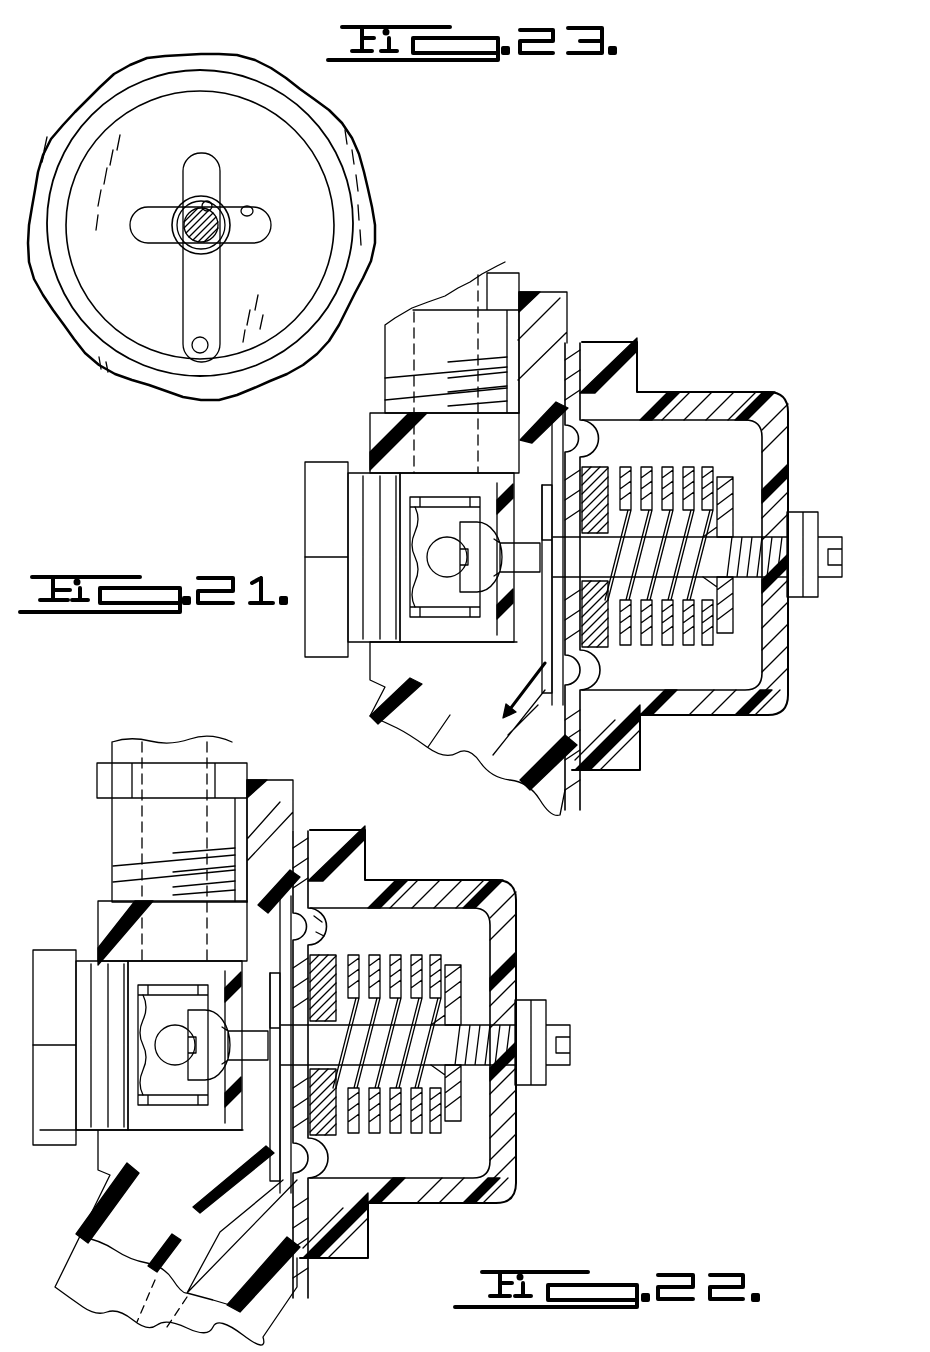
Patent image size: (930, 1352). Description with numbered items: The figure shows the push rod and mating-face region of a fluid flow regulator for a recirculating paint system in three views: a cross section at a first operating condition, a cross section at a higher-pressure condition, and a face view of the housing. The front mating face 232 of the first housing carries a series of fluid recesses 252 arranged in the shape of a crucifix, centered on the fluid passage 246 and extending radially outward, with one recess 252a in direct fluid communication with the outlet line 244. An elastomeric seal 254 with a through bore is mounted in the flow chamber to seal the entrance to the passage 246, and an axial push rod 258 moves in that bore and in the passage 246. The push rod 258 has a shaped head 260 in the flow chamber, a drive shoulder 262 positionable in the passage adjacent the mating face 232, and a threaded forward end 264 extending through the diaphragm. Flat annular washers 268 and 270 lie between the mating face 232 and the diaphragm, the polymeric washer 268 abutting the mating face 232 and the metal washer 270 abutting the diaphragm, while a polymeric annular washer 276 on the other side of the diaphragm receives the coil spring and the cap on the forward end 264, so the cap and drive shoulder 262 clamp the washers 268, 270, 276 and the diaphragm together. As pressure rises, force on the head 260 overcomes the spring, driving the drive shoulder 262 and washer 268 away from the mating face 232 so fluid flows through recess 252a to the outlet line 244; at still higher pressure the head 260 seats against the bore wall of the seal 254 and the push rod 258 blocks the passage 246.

In FIG. 23, the mating face 232 is at (320, 226).
In FIG. 23, the outlet line 244 is at (201, 358).
In FIG. 21, the outlet line 244 is at (460, 752).
In FIG. 22, the outlet line 244 is at (183, 1231).
In FIG. 23, the fluid passage 246 is at (214, 205).
In FIG. 22, the fluid passage 246 is at (255, 1044).
In FIG. 23, the fluid recesses 252 is at (250, 215).
In FIG. 23, the recess 252a is at (187, 286).
In FIG. 21, the recess 252a is at (543, 653).
In FIG. 22, the recess 252a is at (222, 1081).
In FIG. 21, the elastomeric seal 254 is at (500, 625).
In FIG. 22, the elastomeric seal 254 is at (185, 1064).
In FIG. 22, the push rod 258 is at (124, 1047).
In FIG. 21, the shaped head 260 is at (466, 600).
In FIG. 22, the shaped head 260 is at (206, 1026).
In FIG. 23, the drive shoulder 262 is at (222, 240).
In FIG. 21, the drive shoulder 262 is at (578, 548).
In FIG. 21, the threaded forward end 264 is at (622, 520).
In FIG. 22, the washer 268 is at (280, 1064).
In FIG. 22, the washer 270 is at (355, 930).
In FIG. 22, the annular washer 276 is at (377, 1030).